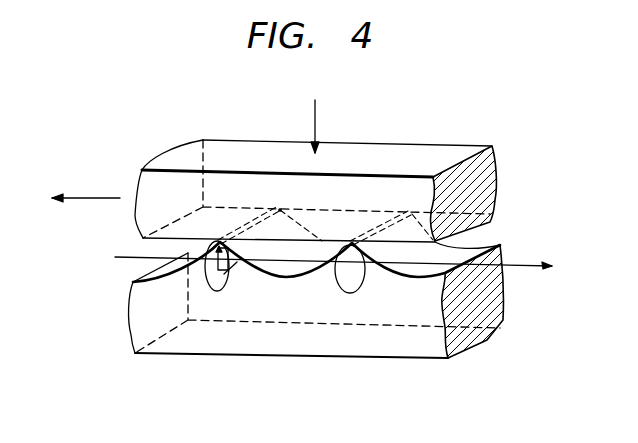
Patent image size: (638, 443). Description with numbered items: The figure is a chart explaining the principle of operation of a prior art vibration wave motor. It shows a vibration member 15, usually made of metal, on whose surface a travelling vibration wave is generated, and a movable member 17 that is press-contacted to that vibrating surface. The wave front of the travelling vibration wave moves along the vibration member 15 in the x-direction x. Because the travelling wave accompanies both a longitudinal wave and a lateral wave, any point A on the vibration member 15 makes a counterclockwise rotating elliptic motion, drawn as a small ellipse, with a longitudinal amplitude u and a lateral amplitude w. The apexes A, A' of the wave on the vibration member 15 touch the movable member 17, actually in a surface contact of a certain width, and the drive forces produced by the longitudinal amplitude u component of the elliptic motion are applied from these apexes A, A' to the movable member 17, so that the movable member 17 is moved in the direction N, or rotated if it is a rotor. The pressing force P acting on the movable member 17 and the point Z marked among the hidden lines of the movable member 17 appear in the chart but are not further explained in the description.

The movable member 17 is at (407, 153).
The vibration member 15 is at (388, 352).
The x-direction x is at (343, 267).
The direction N is at (86, 188).
The pressing force P is at (307, 126).
The center point Z is at (280, 210).
The point A is at (213, 254).
The apex A' is at (345, 256).
The longitudinal amplitude u is at (228, 268).
The lateral amplitude w is at (238, 262).